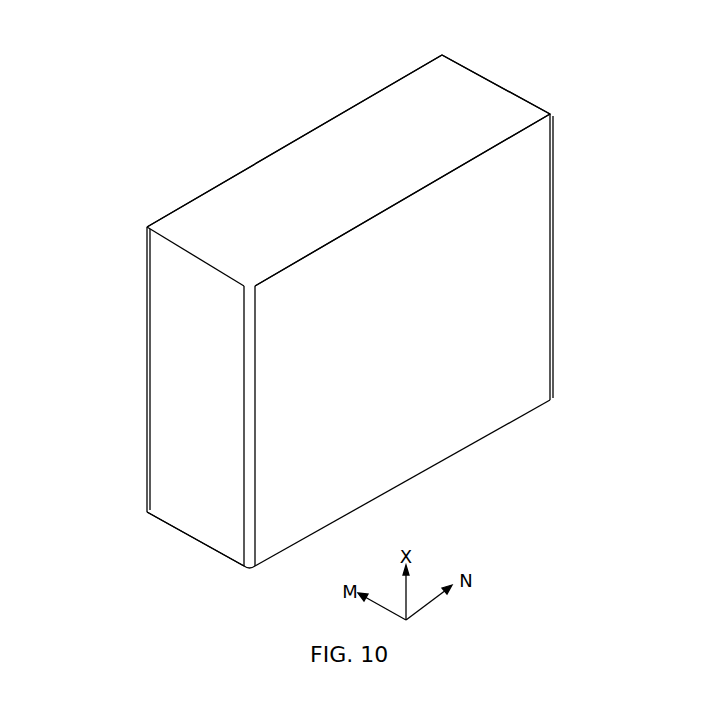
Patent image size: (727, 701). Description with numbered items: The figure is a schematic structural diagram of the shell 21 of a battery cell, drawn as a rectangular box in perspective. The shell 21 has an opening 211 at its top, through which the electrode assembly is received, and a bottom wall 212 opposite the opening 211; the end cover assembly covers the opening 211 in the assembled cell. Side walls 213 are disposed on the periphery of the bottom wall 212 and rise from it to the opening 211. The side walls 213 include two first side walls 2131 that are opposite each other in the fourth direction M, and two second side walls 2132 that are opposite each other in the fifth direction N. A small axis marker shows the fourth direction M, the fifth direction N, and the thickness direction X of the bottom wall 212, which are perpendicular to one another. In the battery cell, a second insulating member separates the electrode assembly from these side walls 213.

The shell 21 is at (327, 27).
The opening 211 is at (228, 200).
The bottom wall 212 is at (417, 477).
The side walls 213 is at (552, 255).
The first side walls 2131 is at (313, 128).
The second side walls 2132 is at (185, 345).